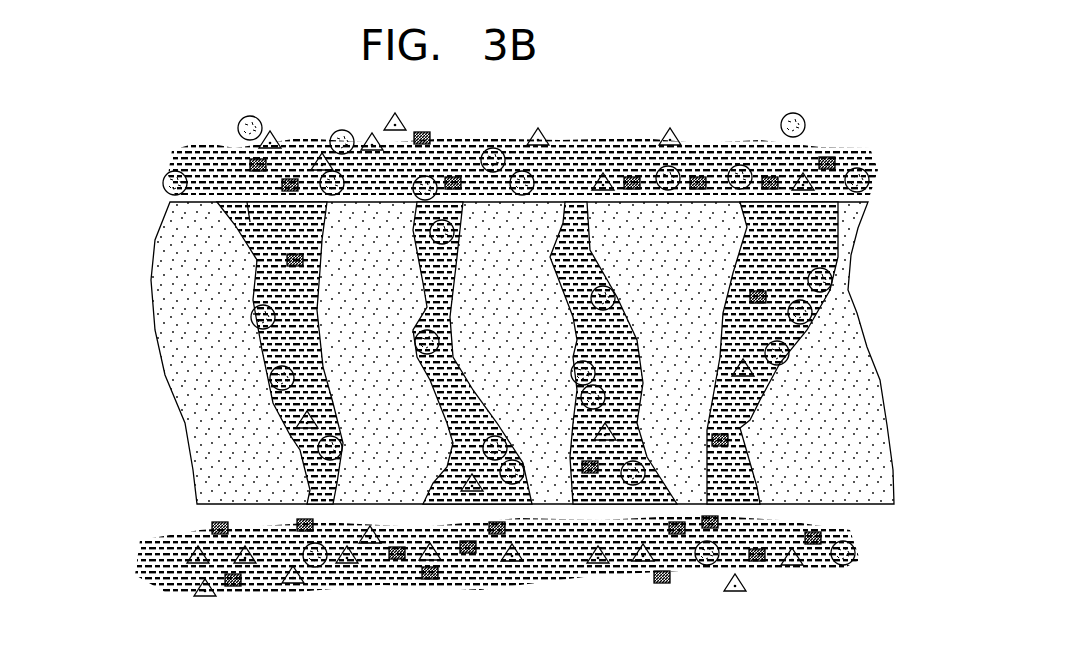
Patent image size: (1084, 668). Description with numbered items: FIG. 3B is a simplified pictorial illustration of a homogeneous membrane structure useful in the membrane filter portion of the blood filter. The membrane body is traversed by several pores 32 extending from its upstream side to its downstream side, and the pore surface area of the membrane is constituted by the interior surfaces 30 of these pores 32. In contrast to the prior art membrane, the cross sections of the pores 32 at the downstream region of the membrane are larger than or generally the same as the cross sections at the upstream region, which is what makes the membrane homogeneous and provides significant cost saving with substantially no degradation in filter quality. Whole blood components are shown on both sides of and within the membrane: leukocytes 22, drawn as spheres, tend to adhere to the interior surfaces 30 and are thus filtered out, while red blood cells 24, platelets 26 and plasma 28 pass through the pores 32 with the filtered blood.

The leukocytes 22 is at (342, 130).
The red blood cells 24 is at (667, 137).
The platelets 26 is at (250, 160).
The plasma 28 is at (200, 155).
The interior surfaces 30 is at (423, 500).
The pores 32 is at (586, 215).